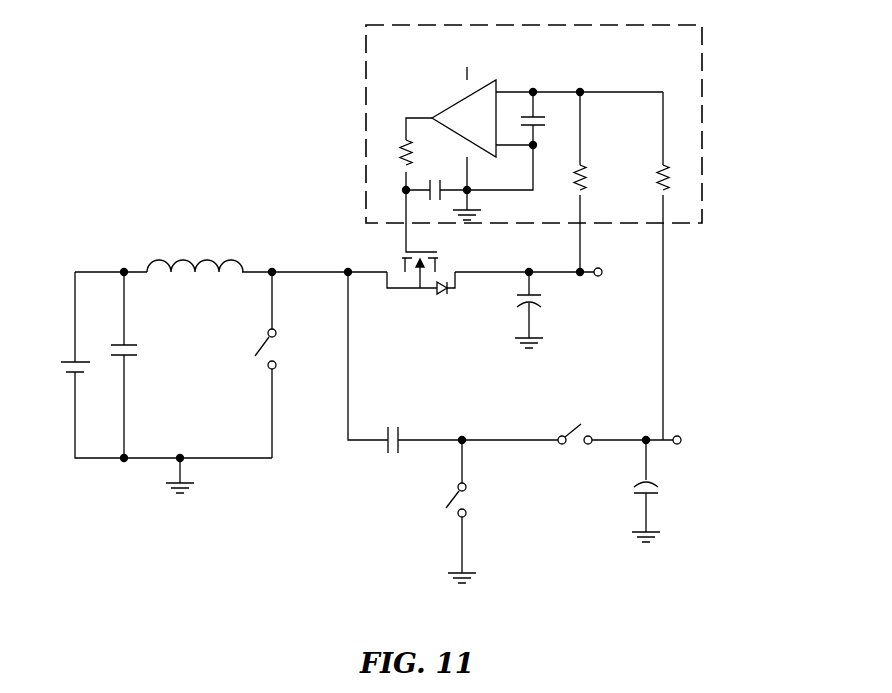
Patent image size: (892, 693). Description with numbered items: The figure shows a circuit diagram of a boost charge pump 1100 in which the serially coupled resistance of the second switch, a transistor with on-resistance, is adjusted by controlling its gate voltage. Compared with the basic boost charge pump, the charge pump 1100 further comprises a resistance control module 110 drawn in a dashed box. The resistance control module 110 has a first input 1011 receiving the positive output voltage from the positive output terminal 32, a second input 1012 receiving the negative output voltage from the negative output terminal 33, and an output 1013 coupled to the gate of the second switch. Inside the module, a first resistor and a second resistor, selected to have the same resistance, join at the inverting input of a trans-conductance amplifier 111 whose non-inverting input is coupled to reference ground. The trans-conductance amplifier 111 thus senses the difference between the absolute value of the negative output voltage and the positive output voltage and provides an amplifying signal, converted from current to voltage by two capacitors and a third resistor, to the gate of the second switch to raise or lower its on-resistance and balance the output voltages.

The boost charge pump 1100 is at (750, 88).
The resistance control module 110 is at (683, 56).
The trans-conductance amplifier 111 is at (452, 106).
The first input 1011 is at (580, 228).
The second input 1012 is at (665, 228).
The output 1013 is at (407, 226).
The positive output terminal 32 is at (590, 277).
The negative output terminal 33 is at (680, 437).